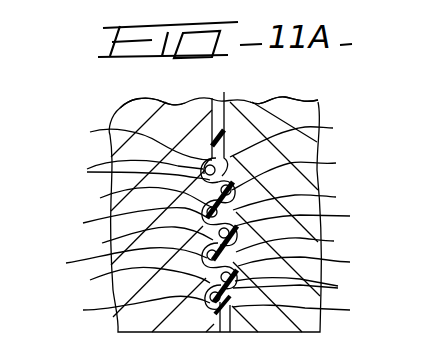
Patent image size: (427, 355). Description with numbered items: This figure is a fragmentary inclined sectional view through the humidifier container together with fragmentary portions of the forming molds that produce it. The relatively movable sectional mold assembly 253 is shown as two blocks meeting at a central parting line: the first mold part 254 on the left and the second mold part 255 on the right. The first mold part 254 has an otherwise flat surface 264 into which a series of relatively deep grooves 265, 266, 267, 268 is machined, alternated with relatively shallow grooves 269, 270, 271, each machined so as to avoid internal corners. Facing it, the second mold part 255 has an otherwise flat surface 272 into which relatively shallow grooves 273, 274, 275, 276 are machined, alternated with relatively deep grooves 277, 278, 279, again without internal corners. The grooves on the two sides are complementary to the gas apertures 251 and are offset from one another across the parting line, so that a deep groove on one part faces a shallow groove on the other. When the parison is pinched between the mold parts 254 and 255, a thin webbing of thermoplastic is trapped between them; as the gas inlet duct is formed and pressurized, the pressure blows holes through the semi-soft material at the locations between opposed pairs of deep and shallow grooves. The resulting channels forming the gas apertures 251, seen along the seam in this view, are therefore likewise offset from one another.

The gas apertures 251 is at (213, 243).
The sectional mold assembly 253 is at (120, 108).
The first mold part 254 is at (170, 107).
The second mold part 255 is at (305, 112).
The flat surface 264 is at (212, 110).
The relatively deep groove 265 is at (131, 140).
The relatively deep groove 266 is at (125, 222).
The relatively deep groove 267 is at (118, 262).
The relatively deep groove 268 is at (125, 310).
The relatively shallow groove 269 is at (136, 199).
The relatively shallow groove 270 is at (137, 243).
The relatively shallow groove 271 is at (131, 280).
The flat surface 272 is at (225, 106).
The relatively shallow groove 273 is at (300, 136).
The relatively shallow groove 274 is at (304, 198).
The relatively shallow groove 275 is at (303, 243).
The relatively shallow groove 276 is at (312, 313).
The relatively deep groove 277 is at (304, 170).
The relatively deep groove 278 is at (312, 218).
The relatively deep groove 279 is at (314, 263).